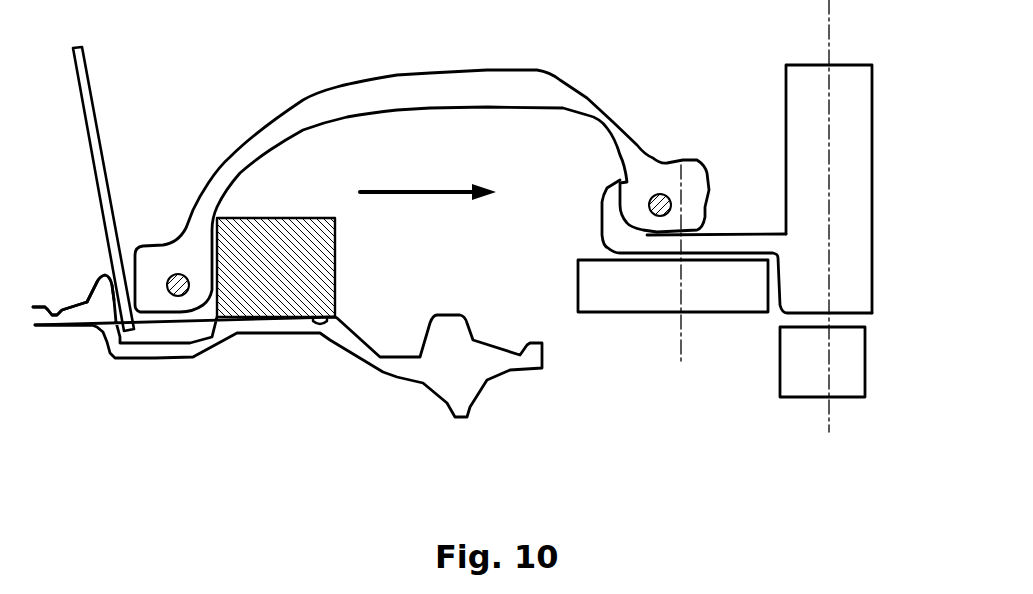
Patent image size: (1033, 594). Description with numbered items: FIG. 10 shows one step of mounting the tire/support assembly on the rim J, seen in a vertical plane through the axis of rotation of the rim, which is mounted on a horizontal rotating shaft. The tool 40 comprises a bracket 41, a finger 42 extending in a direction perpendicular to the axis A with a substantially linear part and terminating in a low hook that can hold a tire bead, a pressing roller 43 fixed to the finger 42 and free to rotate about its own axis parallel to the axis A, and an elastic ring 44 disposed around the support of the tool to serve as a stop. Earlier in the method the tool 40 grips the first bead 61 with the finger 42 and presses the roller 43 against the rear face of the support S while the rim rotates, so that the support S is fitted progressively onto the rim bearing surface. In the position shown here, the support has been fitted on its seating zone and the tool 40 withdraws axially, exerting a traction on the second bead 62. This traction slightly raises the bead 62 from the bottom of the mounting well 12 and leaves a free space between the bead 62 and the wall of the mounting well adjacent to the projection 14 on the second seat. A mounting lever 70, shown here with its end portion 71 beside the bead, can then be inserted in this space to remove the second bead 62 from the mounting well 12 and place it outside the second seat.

The mounting well 12 is at (180, 343).
The projection 14 is at (103, 287).
The tool 40 is at (736, 385).
The bracket 41 is at (857, 103).
The finger 42 is at (602, 200).
The pressing roller 43 is at (653, 287).
The elastic ring 44 is at (848, 370).
The first bead 61 is at (698, 163).
The second bead 62 is at (158, 298).
The mounting lever 70 is at (93, 100).
The lever arm 71 is at (143, 247).
The axis A is at (827, 33).
The support S is at (307, 267).
The rim J is at (305, 330).